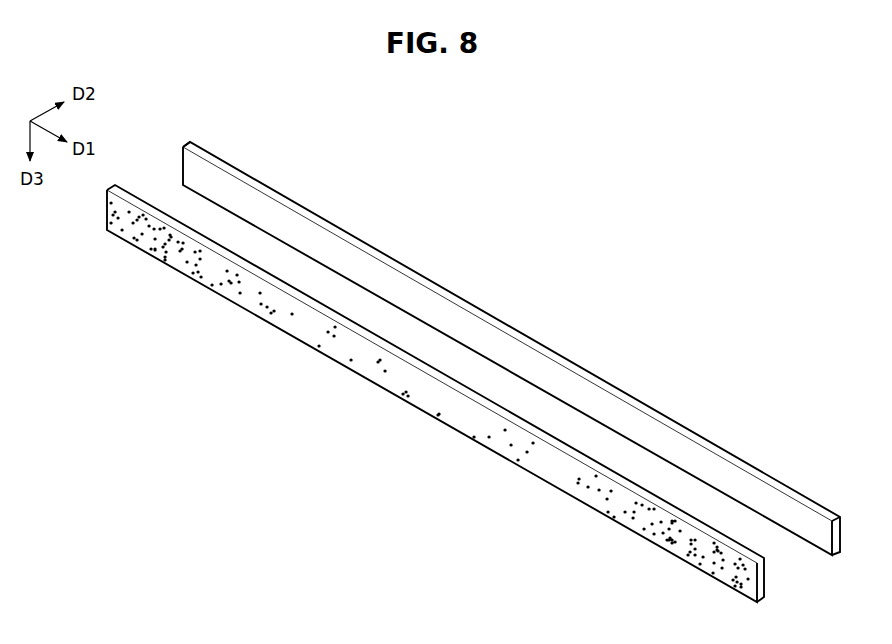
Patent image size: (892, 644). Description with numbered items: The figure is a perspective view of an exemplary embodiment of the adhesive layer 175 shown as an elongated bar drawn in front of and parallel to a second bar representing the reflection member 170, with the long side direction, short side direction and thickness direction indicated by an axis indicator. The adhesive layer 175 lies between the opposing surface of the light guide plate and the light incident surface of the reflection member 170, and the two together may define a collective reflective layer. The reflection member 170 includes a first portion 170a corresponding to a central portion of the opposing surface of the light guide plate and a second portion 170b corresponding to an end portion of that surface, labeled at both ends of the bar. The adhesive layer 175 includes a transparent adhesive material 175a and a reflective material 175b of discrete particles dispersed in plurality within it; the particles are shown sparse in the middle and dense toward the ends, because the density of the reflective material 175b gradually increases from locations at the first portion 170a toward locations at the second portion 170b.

The reflection member 170 is at (516, 328).
The first portion 170a is at (522, 322).
The second portion 170b is at (230, 157).
The adhesive layer 175 is at (435, 393).
The transparent adhesive material 175a is at (468, 428).
The reflective material 175b is at (413, 394).